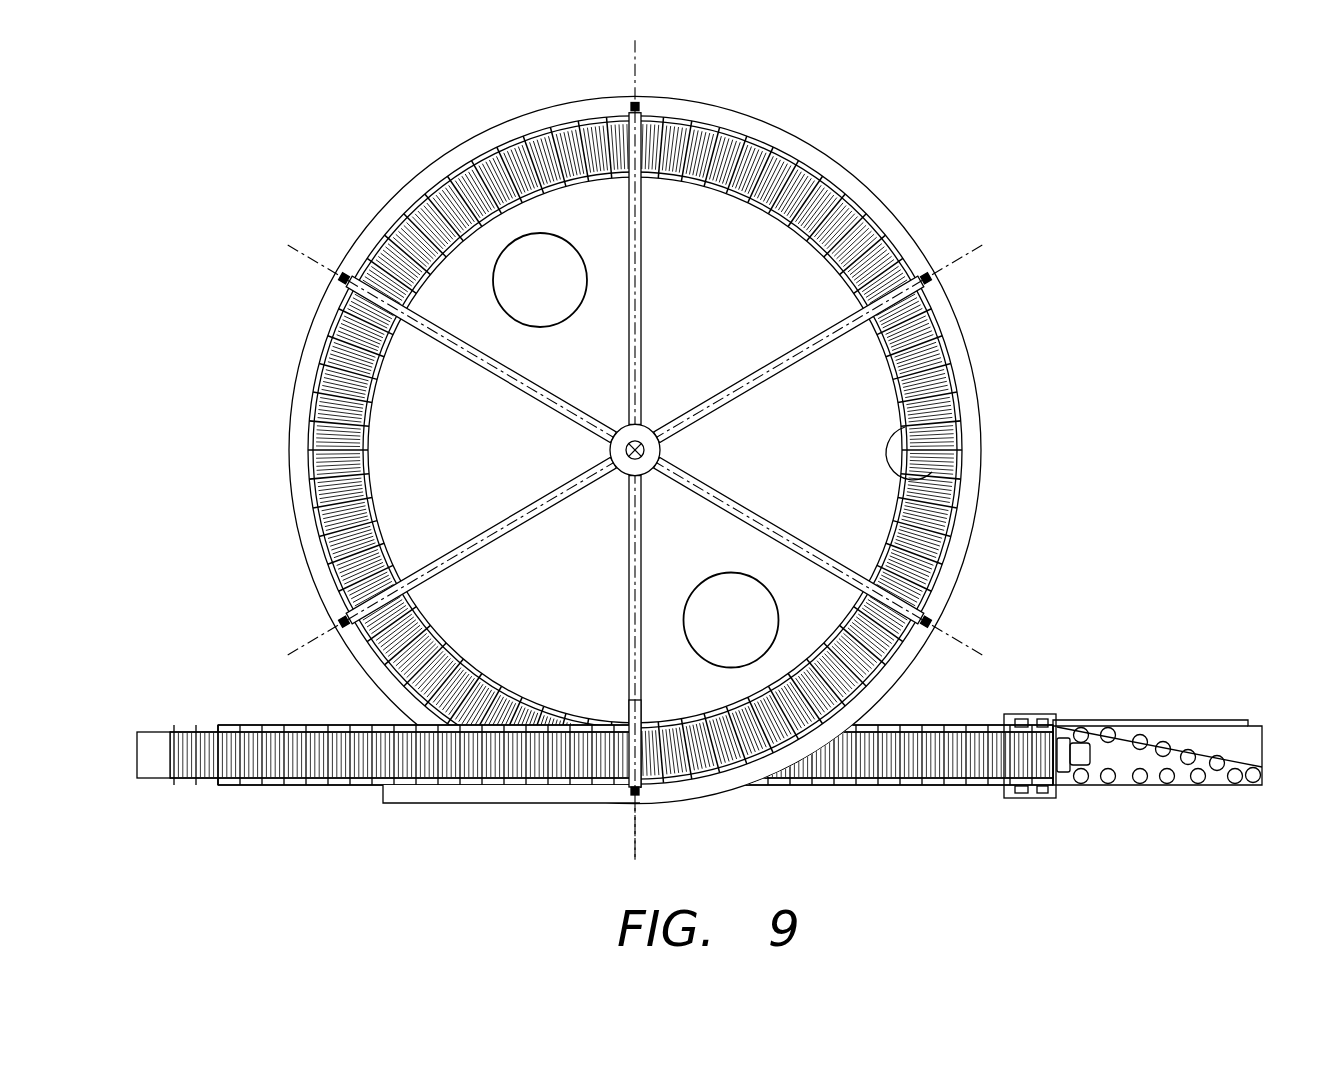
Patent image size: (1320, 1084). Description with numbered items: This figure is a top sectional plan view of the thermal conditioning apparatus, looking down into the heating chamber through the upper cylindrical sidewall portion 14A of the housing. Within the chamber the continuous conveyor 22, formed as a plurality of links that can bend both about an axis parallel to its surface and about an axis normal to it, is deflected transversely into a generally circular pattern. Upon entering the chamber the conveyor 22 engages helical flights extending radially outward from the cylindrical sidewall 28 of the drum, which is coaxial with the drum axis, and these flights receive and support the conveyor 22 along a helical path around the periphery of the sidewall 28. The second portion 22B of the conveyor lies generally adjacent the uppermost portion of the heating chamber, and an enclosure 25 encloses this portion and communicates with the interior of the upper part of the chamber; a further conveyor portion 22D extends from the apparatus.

The upper cylindrical sidewall portion 14A is at (292, 478).
The conveyor 22 is at (818, 170).
The cylindrical sidewall 28 is at (932, 472).
The second portion 22B is at (323, 785).
The enclosure 25 is at (507, 803).
The discharge conveyor section 22D is at (953, 786).